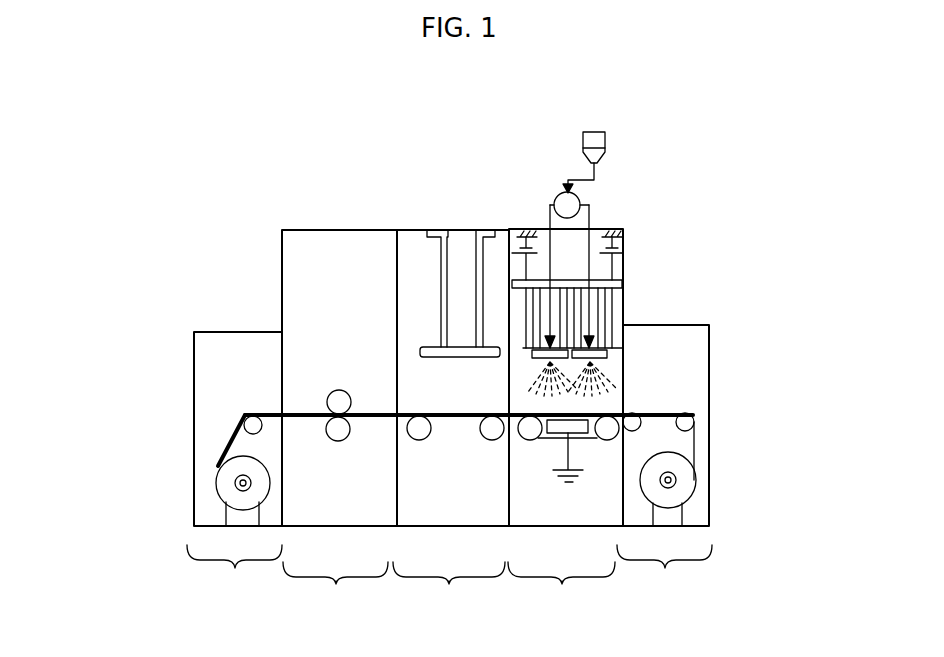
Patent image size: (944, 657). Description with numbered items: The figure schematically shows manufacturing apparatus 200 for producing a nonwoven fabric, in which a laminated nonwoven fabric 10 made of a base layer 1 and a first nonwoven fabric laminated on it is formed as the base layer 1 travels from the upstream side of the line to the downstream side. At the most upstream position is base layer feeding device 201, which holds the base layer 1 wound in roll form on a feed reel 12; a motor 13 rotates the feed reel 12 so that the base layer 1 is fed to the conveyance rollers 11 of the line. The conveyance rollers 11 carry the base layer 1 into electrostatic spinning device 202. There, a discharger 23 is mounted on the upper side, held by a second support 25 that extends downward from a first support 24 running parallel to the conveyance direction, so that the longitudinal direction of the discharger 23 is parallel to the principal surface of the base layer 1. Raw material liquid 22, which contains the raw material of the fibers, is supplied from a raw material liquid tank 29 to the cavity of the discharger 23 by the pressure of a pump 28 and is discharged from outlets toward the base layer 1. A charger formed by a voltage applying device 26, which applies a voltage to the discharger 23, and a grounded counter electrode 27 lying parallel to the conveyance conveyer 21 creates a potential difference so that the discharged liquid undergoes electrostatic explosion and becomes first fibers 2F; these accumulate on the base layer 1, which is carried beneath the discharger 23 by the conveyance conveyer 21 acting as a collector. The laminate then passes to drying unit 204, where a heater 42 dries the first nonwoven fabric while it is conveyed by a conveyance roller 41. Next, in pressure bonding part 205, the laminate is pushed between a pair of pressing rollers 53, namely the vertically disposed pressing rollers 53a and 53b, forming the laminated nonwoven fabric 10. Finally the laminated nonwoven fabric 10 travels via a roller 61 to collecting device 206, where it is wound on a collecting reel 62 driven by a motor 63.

The base layer 1 is at (695, 445).
The first fibers 2F is at (600, 388).
The laminated nonwoven fabric 10 is at (238, 432).
The conveyance rollers 11 is at (640, 413).
The feed reel 12 is at (687, 483).
The motor 13 is at (672, 514).
The conveyance conveyer 21 is at (543, 442).
The raw material liquid 22 is at (605, 150).
The discharger 23 is at (610, 347).
The first support 24 is at (622, 280).
The second support 25 is at (612, 305).
The voltage applying device 26 is at (626, 258).
The counter electrode 27 is at (575, 427).
The pump 28 is at (583, 197).
The raw material liquid tank 29 is at (598, 128).
The conveyance roller 41 is at (487, 438).
The heater 42 is at (430, 348).
The pair of pressing rollers 53 is at (202, 252).
The pressing roller 53a is at (339, 390).
The pressing roller 53b is at (328, 420).
The roller 61 is at (245, 413).
The collecting reel 62 is at (228, 477).
The motor 63 is at (235, 517).
The manufacturing apparatus 200 is at (288, 204).
The base layer feeding device 201 is at (664, 574).
The electrostatic spinning device 202 is at (561, 592).
The drying unit 204 is at (449, 592).
The pressure bonding part 205 is at (335, 592).
The collecting device 206 is at (234, 575).